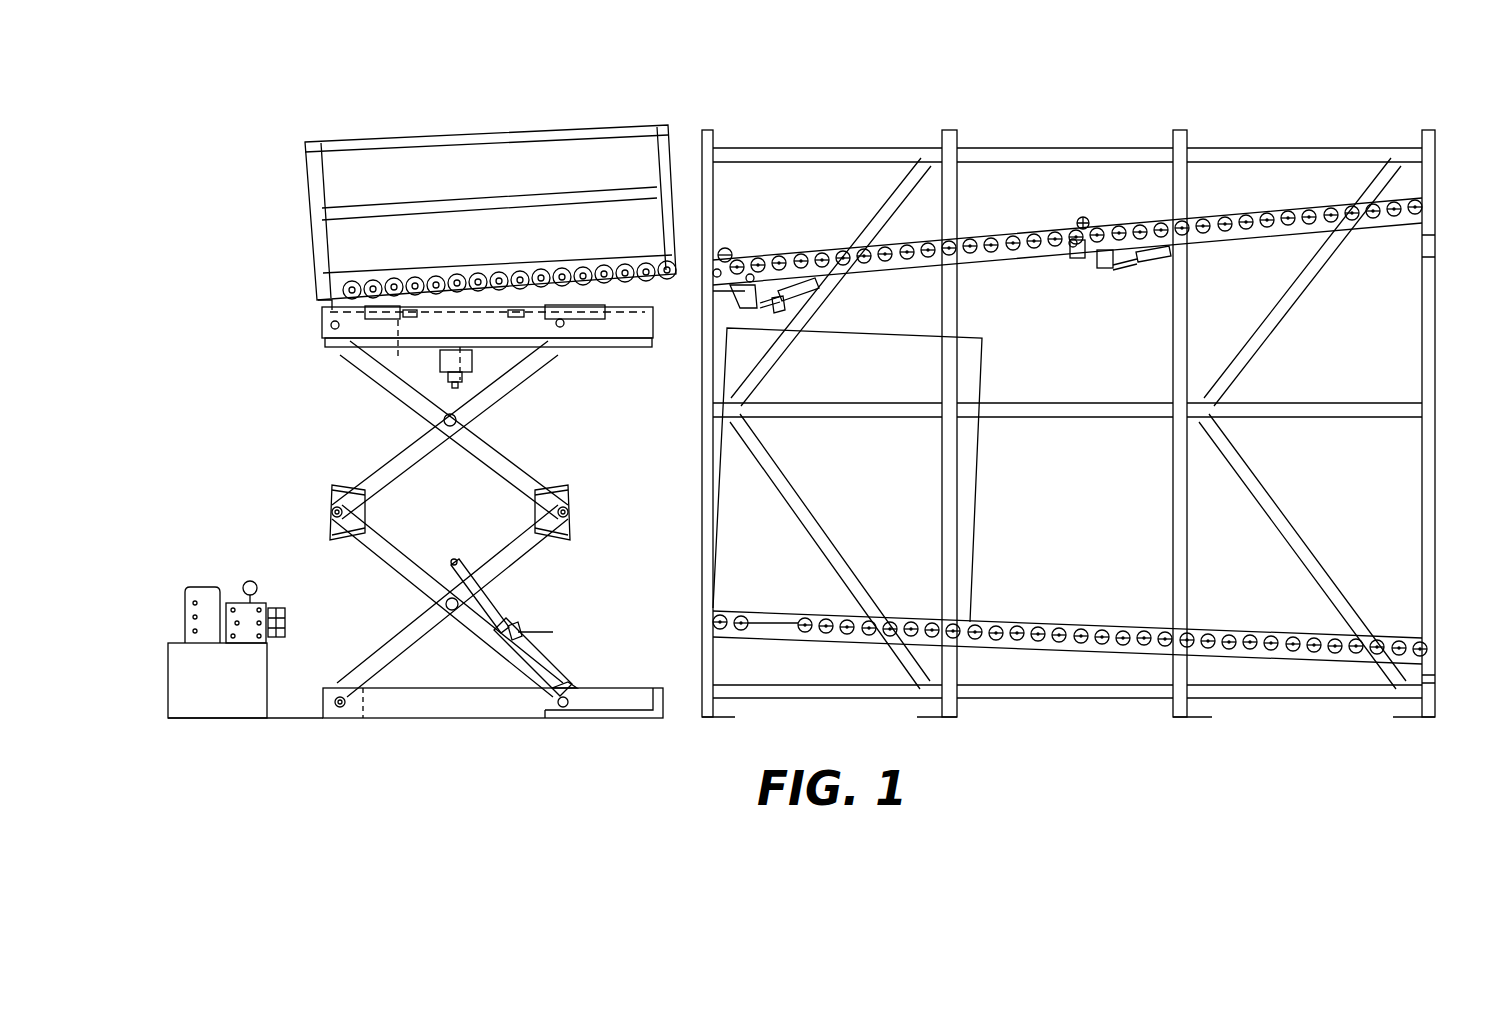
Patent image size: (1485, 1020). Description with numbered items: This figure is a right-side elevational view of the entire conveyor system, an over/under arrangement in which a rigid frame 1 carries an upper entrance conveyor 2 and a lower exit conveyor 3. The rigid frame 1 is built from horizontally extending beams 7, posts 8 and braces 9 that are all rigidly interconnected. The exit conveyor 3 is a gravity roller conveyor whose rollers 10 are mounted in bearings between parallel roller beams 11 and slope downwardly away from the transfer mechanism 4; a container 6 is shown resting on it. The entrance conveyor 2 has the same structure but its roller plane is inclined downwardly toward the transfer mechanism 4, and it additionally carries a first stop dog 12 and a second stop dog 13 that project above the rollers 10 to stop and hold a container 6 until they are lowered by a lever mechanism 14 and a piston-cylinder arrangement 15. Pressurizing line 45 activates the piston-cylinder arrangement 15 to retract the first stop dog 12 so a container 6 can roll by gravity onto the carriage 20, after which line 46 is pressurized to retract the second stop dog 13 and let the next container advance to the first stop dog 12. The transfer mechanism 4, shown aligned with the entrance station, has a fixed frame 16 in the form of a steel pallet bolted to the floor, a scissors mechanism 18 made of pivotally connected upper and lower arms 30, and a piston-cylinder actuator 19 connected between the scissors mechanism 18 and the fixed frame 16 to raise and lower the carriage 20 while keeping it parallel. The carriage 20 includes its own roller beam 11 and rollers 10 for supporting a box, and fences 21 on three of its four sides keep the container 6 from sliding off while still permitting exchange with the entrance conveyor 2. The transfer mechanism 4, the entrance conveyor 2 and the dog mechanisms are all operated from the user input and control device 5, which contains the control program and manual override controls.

The rigid frame 1 is at (1059, 421).
The entrance conveyor 2 is at (1437, 200).
The exit conveyor 3 is at (1435, 647).
The transfer mechanism 4 is at (298, 278).
The user input and control device 5 is at (166, 614).
The container 6 is at (985, 388).
The horizontally extending beams 7 is at (1057, 148).
The posts 8 is at (705, 598).
The braces 9 is at (880, 213).
The rollers 10 is at (580, 275).
The roller beams 11 is at (447, 270).
The first stop dog 12 is at (727, 250).
The second stop dog 13 is at (1083, 216).
The lever mechanism 14 is at (585, 335).
The piston-cylinder arrangement 15 is at (820, 293).
The fixed frame 16 is at (615, 693).
The scissors mechanism 18 is at (545, 478).
The piston-cylinder actuator 19 is at (532, 655).
The carriage 20 is at (320, 313).
The fences 21 is at (475, 133).
The arms 30 is at (413, 397).
The pressurizing line 45 is at (776, 313).
The line 46 is at (1150, 268).